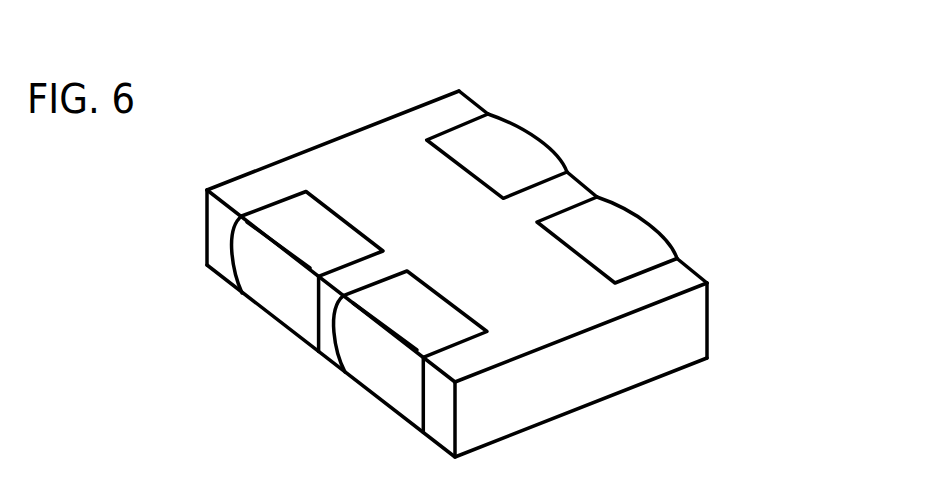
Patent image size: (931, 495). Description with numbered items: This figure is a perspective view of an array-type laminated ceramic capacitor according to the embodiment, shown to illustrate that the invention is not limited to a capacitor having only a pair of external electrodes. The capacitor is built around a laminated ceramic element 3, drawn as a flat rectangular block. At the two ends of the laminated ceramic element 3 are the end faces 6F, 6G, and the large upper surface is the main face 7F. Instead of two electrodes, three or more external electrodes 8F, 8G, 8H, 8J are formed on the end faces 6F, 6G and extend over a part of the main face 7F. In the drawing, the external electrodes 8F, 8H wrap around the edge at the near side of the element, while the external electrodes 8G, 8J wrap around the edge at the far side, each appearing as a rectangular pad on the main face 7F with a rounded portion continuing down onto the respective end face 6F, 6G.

The laminated ceramic element 3 is at (657, 395).
The end face 6F is at (215, 237).
The end face 6G is at (708, 323).
The main face 7F is at (377, 133).
The external electrode 8F is at (282, 298).
The external electrode 8G is at (522, 145).
The external electrode 8H is at (373, 373).
The external electrode 8J is at (638, 237).